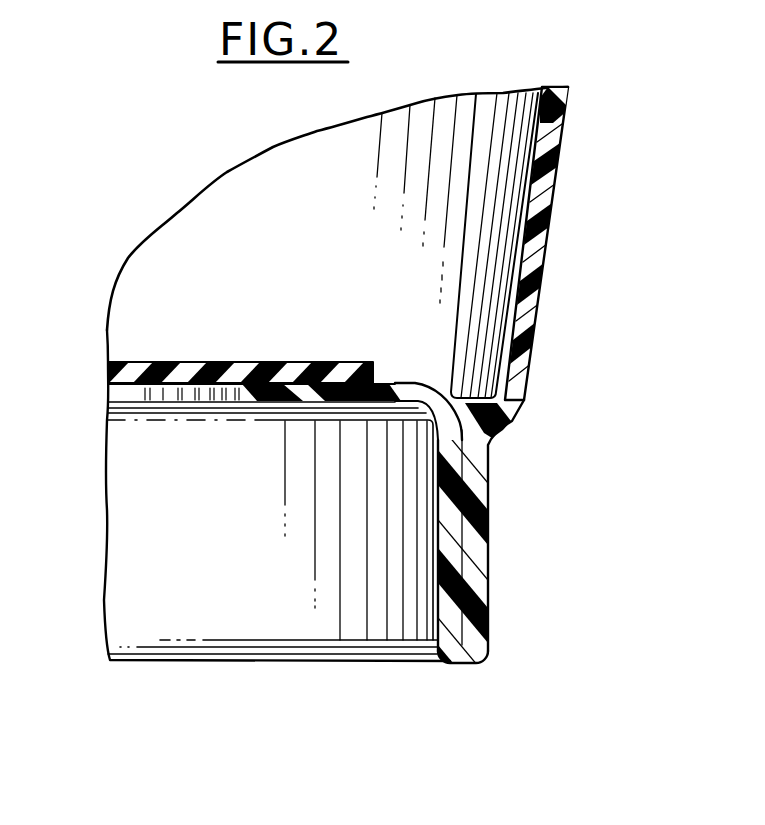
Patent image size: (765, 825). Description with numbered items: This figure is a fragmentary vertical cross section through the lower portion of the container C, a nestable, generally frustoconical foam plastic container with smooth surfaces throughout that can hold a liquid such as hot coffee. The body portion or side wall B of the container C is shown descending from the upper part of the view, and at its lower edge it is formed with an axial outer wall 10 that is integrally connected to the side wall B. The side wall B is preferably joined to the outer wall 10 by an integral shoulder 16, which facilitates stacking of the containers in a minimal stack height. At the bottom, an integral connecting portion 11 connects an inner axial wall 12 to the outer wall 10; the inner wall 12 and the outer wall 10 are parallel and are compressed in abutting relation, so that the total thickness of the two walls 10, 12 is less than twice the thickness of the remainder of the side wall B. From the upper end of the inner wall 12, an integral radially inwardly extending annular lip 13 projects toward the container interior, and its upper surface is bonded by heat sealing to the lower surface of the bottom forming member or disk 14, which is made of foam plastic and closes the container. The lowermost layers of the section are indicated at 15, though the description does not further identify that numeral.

The axial outer wall 10 is at (478, 477).
The integral connecting portion 11 is at (478, 652).
The inner axial wall 12 is at (448, 540).
The radially inwardly extending annular lip 13 is at (307, 390).
The bottom forming member or disk 14 is at (263, 372).
The bottom wall layers 15 is at (228, 622).
The integral shoulder 16 is at (512, 412).
The side wall B is at (547, 248).
The container C is at (568, 190).